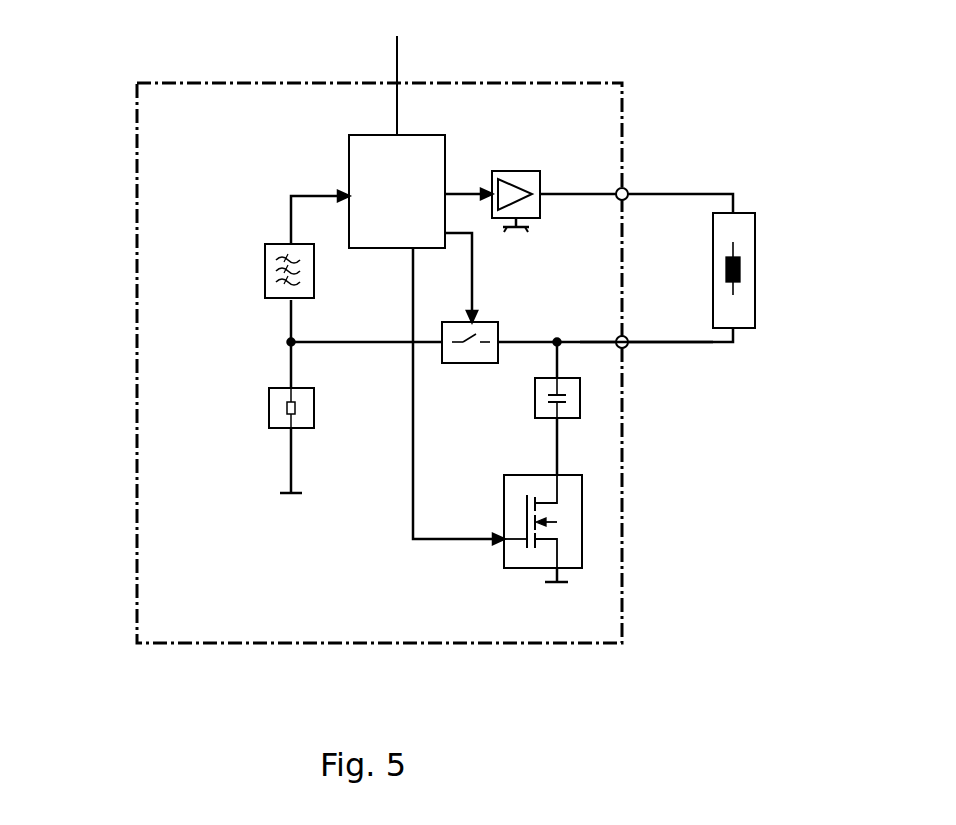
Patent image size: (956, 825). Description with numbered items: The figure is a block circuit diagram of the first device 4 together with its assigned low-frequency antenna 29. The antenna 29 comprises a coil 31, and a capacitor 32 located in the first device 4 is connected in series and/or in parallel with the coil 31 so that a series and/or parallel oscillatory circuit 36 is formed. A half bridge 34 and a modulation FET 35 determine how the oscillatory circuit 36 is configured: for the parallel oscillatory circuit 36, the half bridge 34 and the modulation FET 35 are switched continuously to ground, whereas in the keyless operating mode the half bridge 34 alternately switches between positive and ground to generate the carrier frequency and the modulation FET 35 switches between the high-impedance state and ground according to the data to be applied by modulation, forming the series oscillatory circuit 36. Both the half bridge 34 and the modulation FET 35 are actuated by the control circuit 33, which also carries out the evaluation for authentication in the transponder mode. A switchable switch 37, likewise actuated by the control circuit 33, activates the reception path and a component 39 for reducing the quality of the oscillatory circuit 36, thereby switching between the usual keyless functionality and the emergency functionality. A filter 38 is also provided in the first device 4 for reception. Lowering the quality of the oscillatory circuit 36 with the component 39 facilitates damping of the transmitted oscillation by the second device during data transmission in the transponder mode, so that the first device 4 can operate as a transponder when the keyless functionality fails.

The first device 4 is at (465, 81).
The control circuit 33 is at (397, 128).
The half bridge 34 is at (533, 180).
The filter 38 is at (265, 248).
The component for adapting the quality 39 is at (269, 428).
The switchable switch 37 is at (468, 363).
The low-frequency LF antenna 29 is at (755, 247).
The coil 31 is at (740, 270).
The oscillatory circuit 36 is at (596, 399).
The capacitor 32 is at (570, 408).
The modulation FET 35 is at (568, 513).